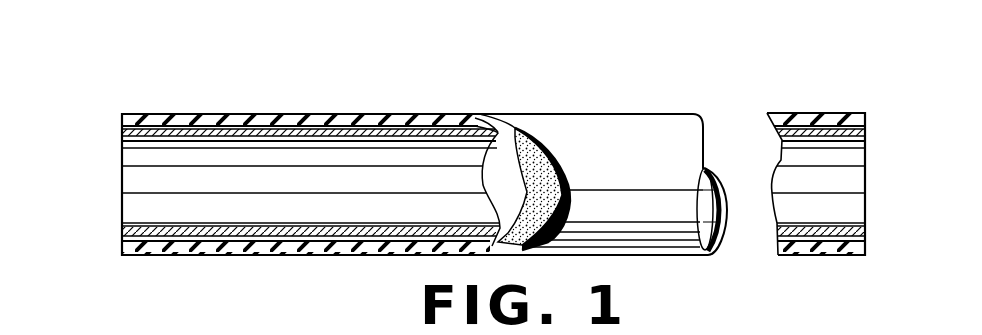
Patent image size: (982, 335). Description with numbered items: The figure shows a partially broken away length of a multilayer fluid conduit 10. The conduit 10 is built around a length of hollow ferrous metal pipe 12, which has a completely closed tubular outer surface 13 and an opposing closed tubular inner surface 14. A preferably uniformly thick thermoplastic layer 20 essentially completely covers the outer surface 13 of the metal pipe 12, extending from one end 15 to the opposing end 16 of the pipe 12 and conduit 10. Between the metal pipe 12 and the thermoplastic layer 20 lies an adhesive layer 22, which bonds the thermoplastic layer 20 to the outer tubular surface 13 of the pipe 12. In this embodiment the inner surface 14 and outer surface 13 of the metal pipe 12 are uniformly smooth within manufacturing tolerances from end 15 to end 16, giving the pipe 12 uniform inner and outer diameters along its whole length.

The multilayer fluid conduit 10 is at (468, 35).
The hollow metal pipe 12 is at (110, 234).
The tubular outer surface 13 is at (500, 201).
The tubular inner surface 14 is at (140, 208).
The end 15 is at (122, 177).
The opposing end 16 is at (866, 143).
The thermoplastic layer 20 is at (194, 108).
The adhesive layer 22 is at (111, 126).